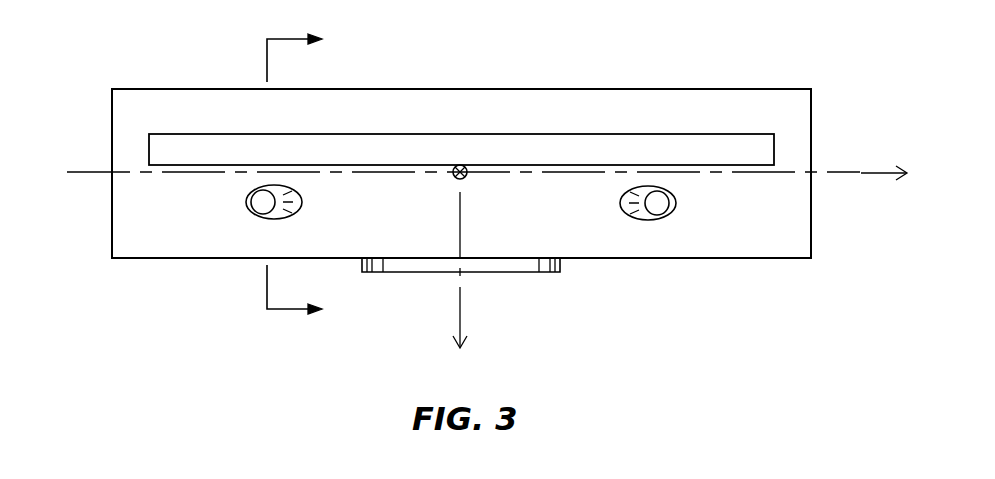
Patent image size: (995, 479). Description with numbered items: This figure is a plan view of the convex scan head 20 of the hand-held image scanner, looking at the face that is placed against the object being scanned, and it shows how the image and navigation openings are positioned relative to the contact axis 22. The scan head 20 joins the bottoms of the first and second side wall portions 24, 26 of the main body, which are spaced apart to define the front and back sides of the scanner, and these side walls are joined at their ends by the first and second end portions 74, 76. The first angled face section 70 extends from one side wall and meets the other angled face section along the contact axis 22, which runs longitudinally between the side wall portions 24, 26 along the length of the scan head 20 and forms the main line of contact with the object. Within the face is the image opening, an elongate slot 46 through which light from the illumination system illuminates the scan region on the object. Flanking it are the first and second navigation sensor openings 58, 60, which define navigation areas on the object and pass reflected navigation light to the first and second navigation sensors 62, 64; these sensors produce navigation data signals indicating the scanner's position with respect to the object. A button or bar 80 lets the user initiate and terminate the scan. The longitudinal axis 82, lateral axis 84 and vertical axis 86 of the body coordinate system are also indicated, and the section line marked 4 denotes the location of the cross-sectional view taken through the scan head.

The convex scan head 20 is at (178, 88).
The contact axis 22 is at (846, 170).
The first side wall portion 24 is at (637, 89).
The second side wall portion 26 is at (687, 260).
The elongate slot 46 is at (536, 134).
The first navigation sensor opening 58 is at (286, 216).
The second navigation sensor opening 60 is at (633, 216).
The first navigation sensor 62 is at (247, 200).
The second navigation sensor 64 is at (672, 203).
The first angled face section 70 is at (447, 126).
The first end portion 74 is at (112, 140).
The second end portion 76 is at (812, 245).
The button or bar 80 is at (412, 273).
The longitudinal axis 82 is at (463, 305).
The lateral axis 84 is at (875, 173).
The vertical axis 86 is at (467, 178).
The section line 4- 4 is at (309, 177).